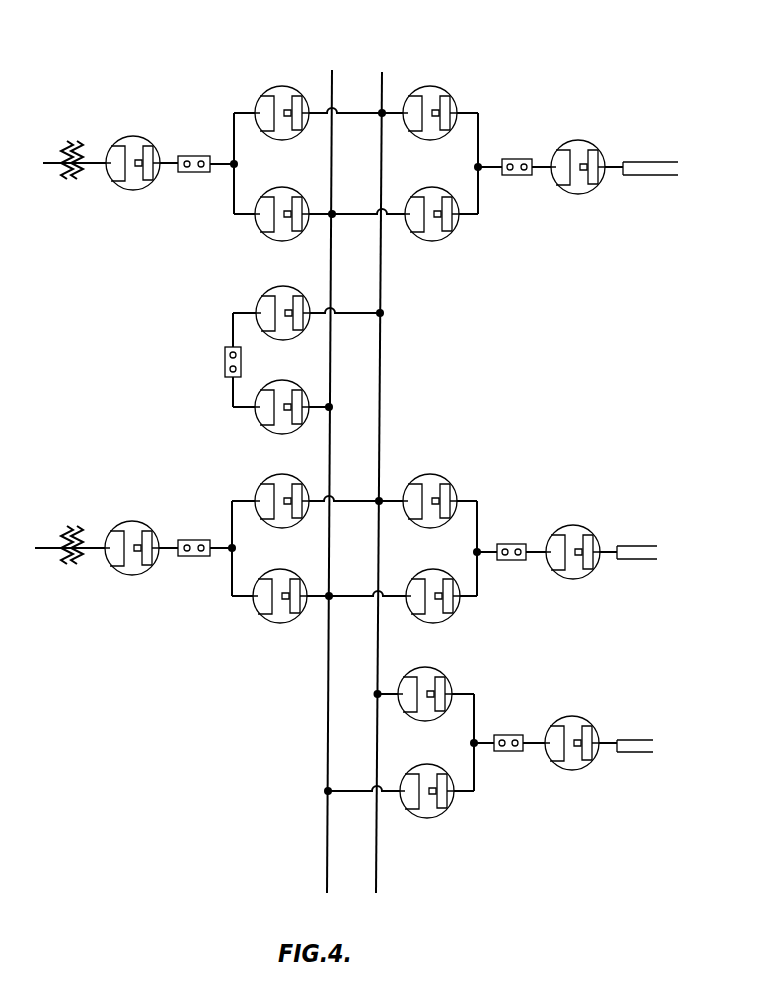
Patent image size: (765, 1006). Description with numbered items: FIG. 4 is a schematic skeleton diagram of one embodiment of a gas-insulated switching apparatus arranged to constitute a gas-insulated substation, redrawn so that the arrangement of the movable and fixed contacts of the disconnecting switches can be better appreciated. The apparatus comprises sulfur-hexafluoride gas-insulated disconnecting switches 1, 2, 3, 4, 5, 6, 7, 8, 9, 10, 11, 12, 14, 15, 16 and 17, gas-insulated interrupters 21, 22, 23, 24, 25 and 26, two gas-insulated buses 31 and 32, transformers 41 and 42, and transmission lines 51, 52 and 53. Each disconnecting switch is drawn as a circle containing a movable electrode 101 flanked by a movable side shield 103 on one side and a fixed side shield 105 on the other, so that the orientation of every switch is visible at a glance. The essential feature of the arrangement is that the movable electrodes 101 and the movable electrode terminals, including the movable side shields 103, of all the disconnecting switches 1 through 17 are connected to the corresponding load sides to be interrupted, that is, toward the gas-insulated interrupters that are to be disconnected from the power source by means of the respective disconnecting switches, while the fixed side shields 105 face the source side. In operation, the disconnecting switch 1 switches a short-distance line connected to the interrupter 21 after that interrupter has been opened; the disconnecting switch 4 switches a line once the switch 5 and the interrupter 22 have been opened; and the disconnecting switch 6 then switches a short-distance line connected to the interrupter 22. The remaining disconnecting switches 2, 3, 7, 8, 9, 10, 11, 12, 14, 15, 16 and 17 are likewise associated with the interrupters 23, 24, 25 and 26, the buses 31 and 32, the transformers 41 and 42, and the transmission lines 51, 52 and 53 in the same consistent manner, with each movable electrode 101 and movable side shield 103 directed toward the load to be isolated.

The disconnecting switch 1 is at (134, 134).
The disconnecting switch 2 is at (283, 86).
The disconnecting switch 3 is at (275, 188).
The disconnecting switch 4 is at (440, 86).
The disconnecting switch 5 is at (427, 187).
The disconnecting switch 6 is at (583, 140).
The disconnecting switch 7 is at (130, 521).
The disconnecting switch 8 is at (280, 474).
The disconnecting switch 9 is at (275, 569).
The disconnecting switch 10 is at (437, 476).
The disconnecting switch 11 is at (420, 577).
The disconnecting switch 12 is at (578, 526).
The disconnecting switch 14 is at (420, 768).
The disconnecting switch 15 is at (432, 669).
The disconnecting switch 16 is at (270, 288).
The disconnecting switch 17 is at (277, 381).
The interrupter 21 is at (196, 156).
The interrupter 22 is at (517, 159).
The interrupter 23 is at (195, 540).
The interrupter 24 is at (512, 544).
The interrupter 25 is at (512, 735).
The interrupter 26 is at (225, 360).
The bus 31 is at (332, 70).
The bus 32 is at (382, 72).
The transformer 41 is at (70, 140).
The transformer 42 is at (70, 526).
The transmission line 51 is at (658, 162).
The transmission line 52 is at (645, 546).
The transmission line 53 is at (645, 740).
The movable electrode 101 is at (137, 168).
The movable side shield 103 is at (152, 170).
The fixed side shield 105 is at (112, 175).